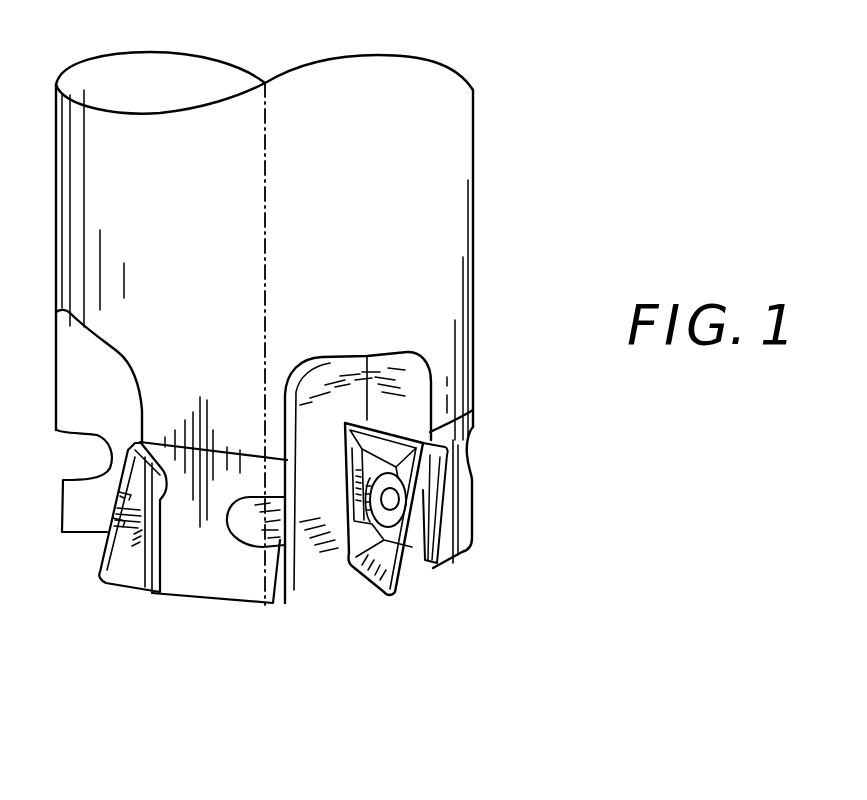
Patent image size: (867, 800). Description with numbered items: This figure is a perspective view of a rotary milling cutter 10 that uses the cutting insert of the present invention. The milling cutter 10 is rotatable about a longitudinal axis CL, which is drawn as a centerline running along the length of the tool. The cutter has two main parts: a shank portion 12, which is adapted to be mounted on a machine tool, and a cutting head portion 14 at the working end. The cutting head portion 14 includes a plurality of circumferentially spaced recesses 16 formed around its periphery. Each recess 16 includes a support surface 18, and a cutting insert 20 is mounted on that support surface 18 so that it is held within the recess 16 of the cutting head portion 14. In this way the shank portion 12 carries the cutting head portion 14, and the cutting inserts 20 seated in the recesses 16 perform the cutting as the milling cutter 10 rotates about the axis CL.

The rotary milling cutter 10 is at (519, 237).
The shank portion 12 is at (478, 144).
The cutting head portion 14 is at (476, 502).
The recess 16 is at (331, 602).
The support surface 18 is at (160, 540).
The cutting insert 20 is at (419, 580).
The longitudinal axis CL is at (266, 145).